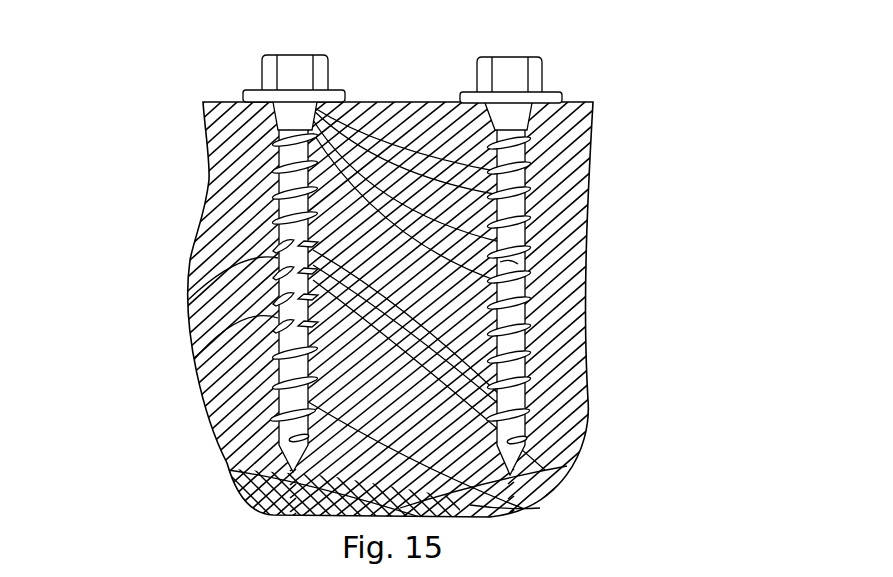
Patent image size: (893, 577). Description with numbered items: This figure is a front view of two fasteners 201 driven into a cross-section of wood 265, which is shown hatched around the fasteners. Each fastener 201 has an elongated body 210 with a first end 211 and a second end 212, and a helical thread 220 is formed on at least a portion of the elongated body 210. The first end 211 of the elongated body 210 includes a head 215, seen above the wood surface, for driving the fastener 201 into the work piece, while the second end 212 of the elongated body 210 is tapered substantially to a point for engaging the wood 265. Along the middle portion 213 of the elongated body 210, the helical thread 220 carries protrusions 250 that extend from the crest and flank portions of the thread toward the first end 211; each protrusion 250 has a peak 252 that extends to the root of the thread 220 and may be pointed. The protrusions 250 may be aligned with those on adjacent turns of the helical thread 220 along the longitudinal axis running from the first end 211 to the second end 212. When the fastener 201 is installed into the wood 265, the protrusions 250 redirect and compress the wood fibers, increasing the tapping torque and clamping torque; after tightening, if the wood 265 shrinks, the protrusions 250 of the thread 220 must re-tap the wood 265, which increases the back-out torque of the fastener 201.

The fastener 201 is at (401, 237).
The elongated body 210 is at (392, 310).
The first end 211 is at (250, 118).
The second end 212 is at (265, 448).
The middle portion 213 is at (253, 310).
The head 215 is at (265, 78).
The helical thread 220 is at (401, 288).
The protrusion 250 is at (276, 250).
The peak 252 is at (533, 265).
The wood 265 is at (450, 497).